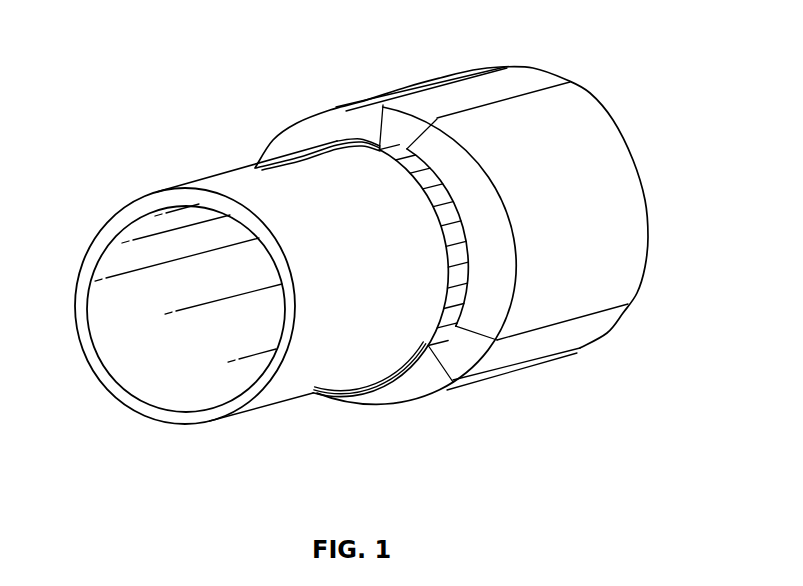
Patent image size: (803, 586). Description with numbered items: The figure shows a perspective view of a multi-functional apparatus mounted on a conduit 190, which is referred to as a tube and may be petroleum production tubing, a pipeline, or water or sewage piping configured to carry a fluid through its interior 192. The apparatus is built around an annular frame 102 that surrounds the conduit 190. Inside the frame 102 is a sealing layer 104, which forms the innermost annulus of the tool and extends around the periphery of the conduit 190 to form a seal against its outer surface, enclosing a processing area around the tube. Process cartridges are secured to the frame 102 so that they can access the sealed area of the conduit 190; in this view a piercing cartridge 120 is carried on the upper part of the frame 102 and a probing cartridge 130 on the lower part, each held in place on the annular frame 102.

The frame 102 is at (627, 192).
The sealing layer 104 is at (357, 141).
The piercing cartridge 120 is at (443, 93).
The probing cartridge 130 is at (587, 327).
The conduit 190 is at (121, 211).
The interior 192 is at (126, 361).